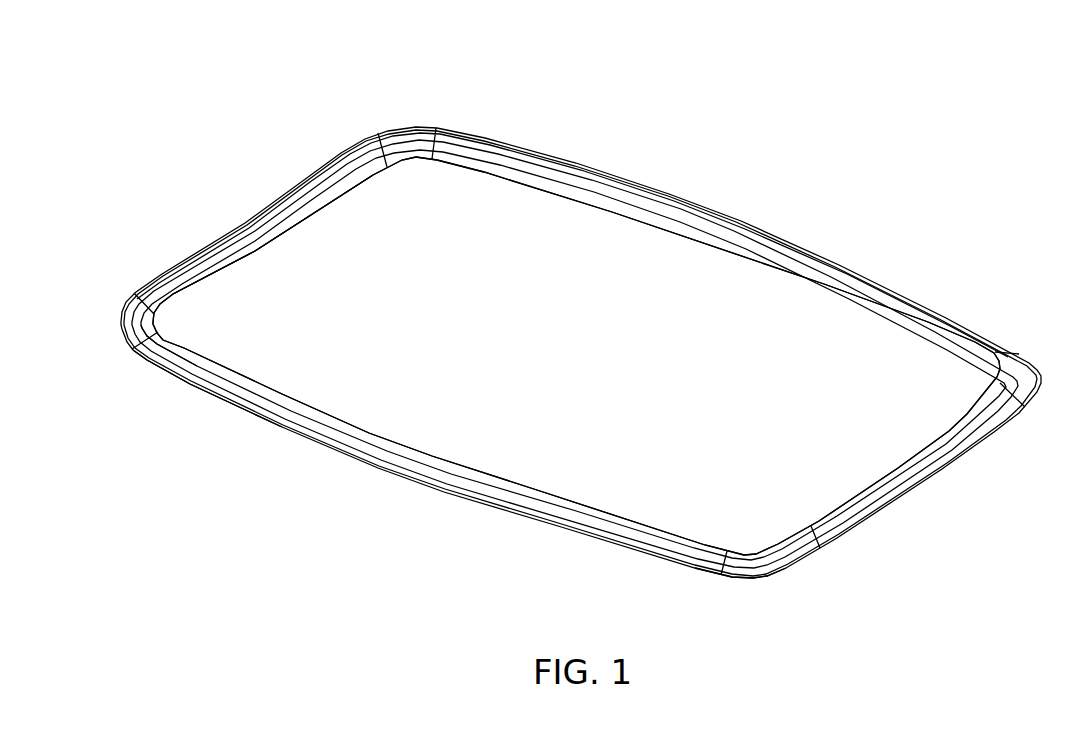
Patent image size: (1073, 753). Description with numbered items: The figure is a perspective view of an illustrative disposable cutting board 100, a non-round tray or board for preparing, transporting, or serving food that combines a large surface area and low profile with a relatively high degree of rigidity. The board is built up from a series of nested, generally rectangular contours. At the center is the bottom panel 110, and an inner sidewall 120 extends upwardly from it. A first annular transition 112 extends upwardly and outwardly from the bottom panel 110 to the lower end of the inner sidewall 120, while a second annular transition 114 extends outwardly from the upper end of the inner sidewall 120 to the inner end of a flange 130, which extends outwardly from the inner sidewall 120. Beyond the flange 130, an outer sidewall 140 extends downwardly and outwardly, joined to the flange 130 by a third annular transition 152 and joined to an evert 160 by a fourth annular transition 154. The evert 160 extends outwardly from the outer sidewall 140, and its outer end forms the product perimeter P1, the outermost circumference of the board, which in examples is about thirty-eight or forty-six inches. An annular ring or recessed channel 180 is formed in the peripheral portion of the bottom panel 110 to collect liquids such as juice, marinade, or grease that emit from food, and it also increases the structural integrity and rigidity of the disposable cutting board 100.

The disposable cutting board 100 is at (205, 65).
The bottom panel 110 is at (518, 330).
The first annular transition 112 is at (267, 259).
The second annular transition 114 is at (292, 229).
The inner sidewall 120 is at (225, 267).
The flange 130 is at (263, 220).
The outer sidewall 140 is at (298, 420).
The third annular transition 152 is at (172, 355).
The fourth annular transition 154 is at (203, 389).
The evert 160 is at (343, 455).
The recessed channel 180 is at (350, 197).
The product perimeter P1 is at (770, 577).